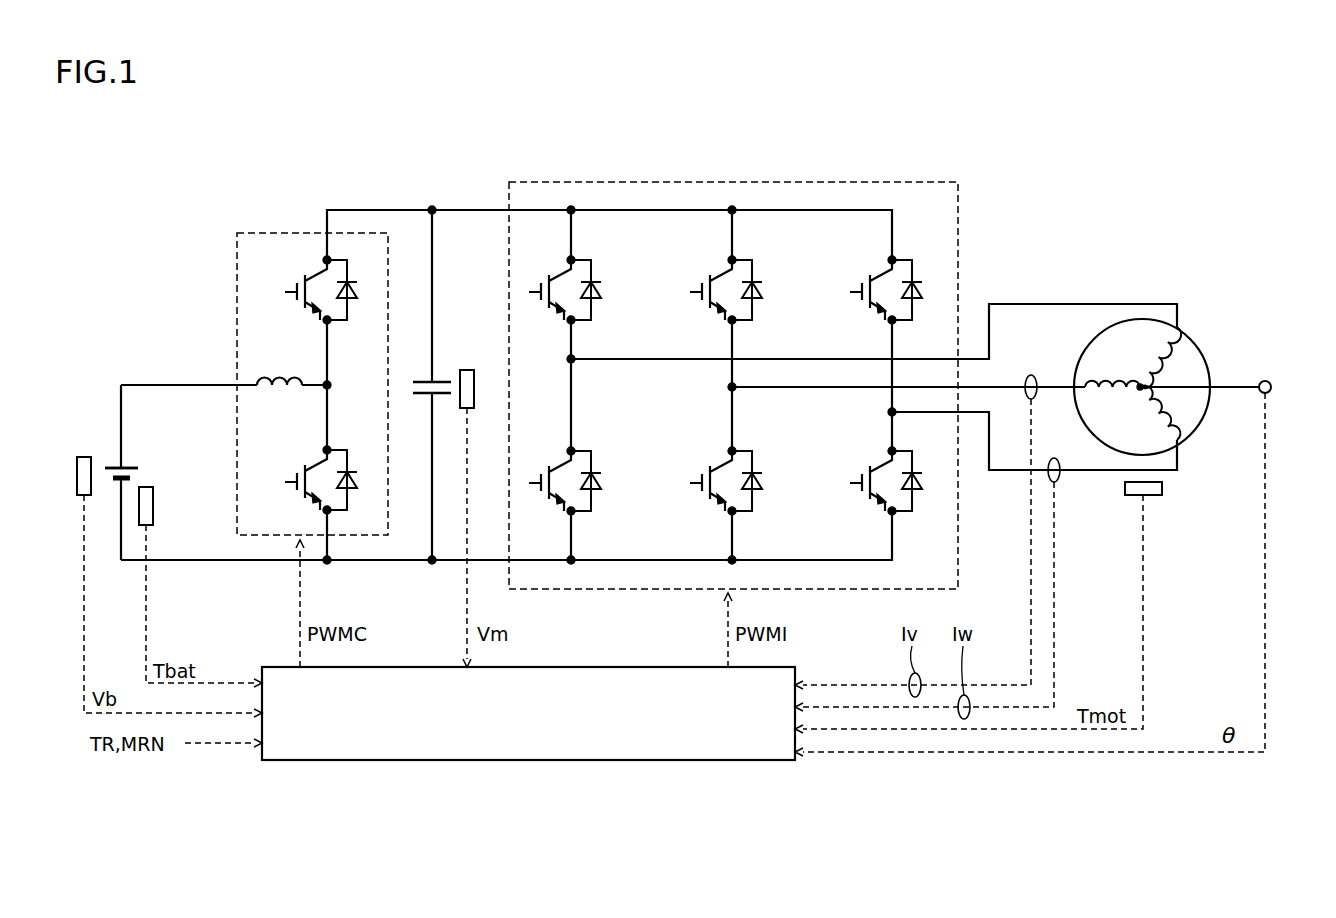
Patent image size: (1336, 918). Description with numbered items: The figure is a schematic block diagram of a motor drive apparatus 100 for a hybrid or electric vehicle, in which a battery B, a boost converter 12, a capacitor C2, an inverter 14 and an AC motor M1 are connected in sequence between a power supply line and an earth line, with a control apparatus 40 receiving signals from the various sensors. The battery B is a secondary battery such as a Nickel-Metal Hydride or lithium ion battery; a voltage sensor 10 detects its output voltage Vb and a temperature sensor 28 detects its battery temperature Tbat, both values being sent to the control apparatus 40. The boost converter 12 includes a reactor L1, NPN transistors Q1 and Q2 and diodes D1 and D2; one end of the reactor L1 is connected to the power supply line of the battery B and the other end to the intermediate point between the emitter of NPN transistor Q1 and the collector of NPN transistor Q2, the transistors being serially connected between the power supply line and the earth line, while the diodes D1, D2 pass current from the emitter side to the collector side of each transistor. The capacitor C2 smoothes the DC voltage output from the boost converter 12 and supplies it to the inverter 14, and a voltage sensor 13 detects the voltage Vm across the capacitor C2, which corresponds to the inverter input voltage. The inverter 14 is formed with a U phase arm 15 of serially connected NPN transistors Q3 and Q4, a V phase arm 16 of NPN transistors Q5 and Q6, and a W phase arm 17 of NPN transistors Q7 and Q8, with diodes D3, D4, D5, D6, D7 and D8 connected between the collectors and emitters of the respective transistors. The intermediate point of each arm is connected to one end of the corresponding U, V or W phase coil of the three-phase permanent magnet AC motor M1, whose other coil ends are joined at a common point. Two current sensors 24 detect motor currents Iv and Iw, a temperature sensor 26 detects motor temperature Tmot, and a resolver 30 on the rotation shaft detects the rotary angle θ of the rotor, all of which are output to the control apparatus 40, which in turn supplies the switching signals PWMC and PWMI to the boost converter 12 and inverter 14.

The motor drive apparatus 100 is at (534, 134).
The voltage sensor 10 is at (84, 457).
The boost converter 12 is at (312, 360).
The voltage sensor 13 is at (467, 370).
The inverter 14 is at (733, 362).
The U phase arm 15 is at (557, 371).
The V phase arm 16 is at (715, 398).
The W phase arm 17 is at (875, 416).
The current sensor 24 is at (1031, 375).
The temperature sensor 26 is at (1162, 488).
The temperature sensor 28 is at (149, 487).
The resolver 30 is at (1271, 383).
The control apparatus 40 is at (760, 760).
The battery B is at (130, 466).
The capacitor C2 is at (418, 380).
The reactor L1 is at (279, 366).
The AC motor M1 is at (1196, 345).
The NPN transistor Q1 is at (321, 287).
The NPN transistor Q2 is at (321, 477).
The NPN transistor Q3 is at (565, 287).
The NPN transistor Q4 is at (565, 478).
The NPN transistor Q5 is at (726, 287).
The NPN transistor Q6 is at (726, 478).
The NPN transistor Q7 is at (886, 287).
The NPN transistor Q8 is at (886, 478).
The diode D1 is at (366, 316).
The diode D2 is at (366, 506).
The diode D3 is at (610, 316).
The diode D4 is at (610, 507).
The diode D5 is at (771, 316).
The diode D6 is at (771, 507).
The diode D7 is at (931, 316).
The diode D8 is at (931, 507).